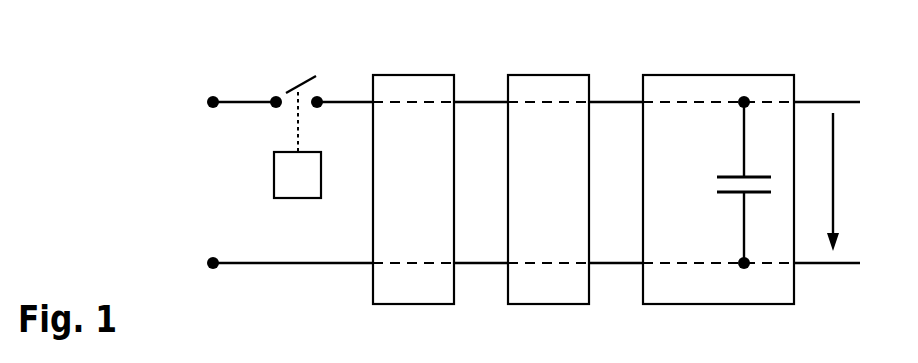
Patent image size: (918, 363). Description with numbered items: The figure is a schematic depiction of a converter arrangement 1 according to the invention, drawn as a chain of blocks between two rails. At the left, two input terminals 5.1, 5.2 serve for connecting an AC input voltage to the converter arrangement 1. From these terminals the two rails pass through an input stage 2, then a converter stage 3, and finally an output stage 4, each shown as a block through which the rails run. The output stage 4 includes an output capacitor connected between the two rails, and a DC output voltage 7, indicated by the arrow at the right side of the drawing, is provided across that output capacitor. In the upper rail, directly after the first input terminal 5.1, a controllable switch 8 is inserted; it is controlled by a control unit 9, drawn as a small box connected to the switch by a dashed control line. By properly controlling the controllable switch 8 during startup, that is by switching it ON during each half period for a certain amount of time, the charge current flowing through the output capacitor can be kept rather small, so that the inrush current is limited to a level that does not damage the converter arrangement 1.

The converter arrangement 1 is at (138, 41).
The input stage 2 is at (413, 189).
The converter stage 3 is at (548, 189).
The output stage 4 is at (718, 189).
The input terminal 5.1 is at (206, 101).
The input terminal 5.2 is at (206, 262).
The DC output voltage 7 is at (836, 166).
The controllable switch 8 is at (287, 91).
The control unit 9 is at (297, 175).